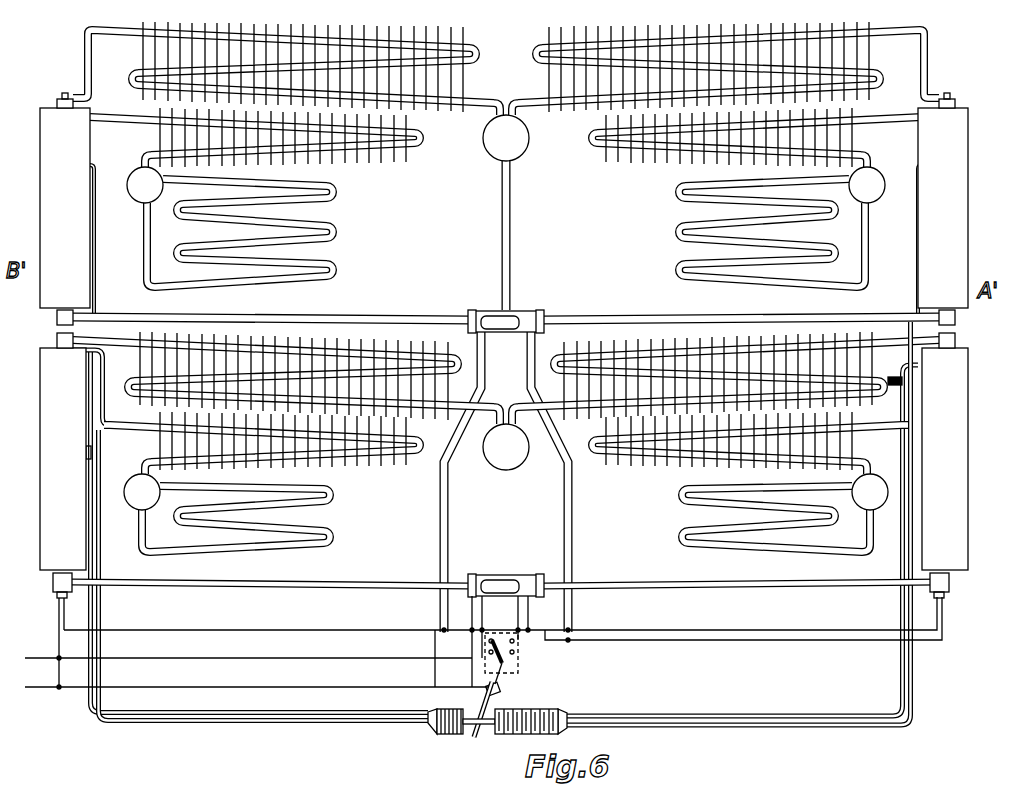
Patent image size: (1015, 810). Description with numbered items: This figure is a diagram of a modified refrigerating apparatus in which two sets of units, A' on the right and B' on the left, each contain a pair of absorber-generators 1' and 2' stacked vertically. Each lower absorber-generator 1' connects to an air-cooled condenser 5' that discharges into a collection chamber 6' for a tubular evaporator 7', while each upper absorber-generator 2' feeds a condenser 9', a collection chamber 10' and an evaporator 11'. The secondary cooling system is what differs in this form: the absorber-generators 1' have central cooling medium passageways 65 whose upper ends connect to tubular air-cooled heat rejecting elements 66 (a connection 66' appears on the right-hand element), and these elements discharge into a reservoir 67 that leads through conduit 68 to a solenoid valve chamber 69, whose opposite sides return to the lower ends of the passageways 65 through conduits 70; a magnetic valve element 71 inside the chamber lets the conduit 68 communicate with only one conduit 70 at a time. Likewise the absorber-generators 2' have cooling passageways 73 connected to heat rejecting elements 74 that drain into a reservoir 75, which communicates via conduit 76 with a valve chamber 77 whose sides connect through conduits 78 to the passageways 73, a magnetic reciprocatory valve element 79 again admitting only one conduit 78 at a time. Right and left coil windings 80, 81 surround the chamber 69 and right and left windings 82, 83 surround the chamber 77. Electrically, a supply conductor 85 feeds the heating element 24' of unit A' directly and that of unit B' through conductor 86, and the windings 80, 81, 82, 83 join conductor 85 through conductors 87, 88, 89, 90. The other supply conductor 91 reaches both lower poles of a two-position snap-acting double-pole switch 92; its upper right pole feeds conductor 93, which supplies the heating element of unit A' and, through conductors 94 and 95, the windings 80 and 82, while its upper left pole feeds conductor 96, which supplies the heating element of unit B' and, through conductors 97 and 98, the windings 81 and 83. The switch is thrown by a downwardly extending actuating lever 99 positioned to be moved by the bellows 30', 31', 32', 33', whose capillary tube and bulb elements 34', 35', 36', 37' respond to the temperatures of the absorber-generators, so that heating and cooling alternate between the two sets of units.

The tubular air cooled heat rejecting element 74 is at (108, 48).
The reservoir 75 is at (506, 138).
The conduit 76 is at (512, 236).
The valve chamber 77 is at (510, 310).
The magnetic reciprocatory valve element 79 is at (497, 316).
The right hand coil winding 82 is at (544, 314).
The left hand coil winding 83 is at (469, 314).
The conduit 78 is at (340, 315).
The cooling medium passageway 73 is at (56, 318).
The cooling medium passageway 65 is at (56, 341).
The tubular air cooled heat rejecting element 66 is at (506, 378).
The valve connection 66' is at (742, 537).
The reservoir 67 is at (506, 447).
The conduit 68 is at (560, 528).
The conductor 98 is at (452, 522).
The conductor 95 is at (563, 535).
The magnetic valve element 71 is at (494, 575).
The right hand coil winding 80 is at (522, 575).
The left hand coil winding 81 is at (470, 578).
The solenoid valve chamber 69 is at (543, 577).
The conduit 70 is at (360, 582).
The conductor 90 is at (438, 611).
The conductor 88 is at (470, 621).
The conductor 97 is at (483, 611).
The conductor 87 is at (530, 619).
The conductor 89 is at (570, 613).
The conductor 96 is at (318, 631).
The conductor 93 is at (686, 633).
The supply conductor 91 is at (155, 656).
The electrical supply conductor 85 is at (275, 687).
The conductor 86 is at (58, 641).
The two position snap acting double pole switch 92 is at (486, 650).
The conductor 94 is at (514, 633).
The actuating lever 99 is at (485, 691).
The bellows 30' is at (452, 731).
The bellows 31' is at (471, 720).
The bellows 32' is at (531, 710).
The bellows 33' is at (562, 710).
The heating element 24' is at (505, 594).
The capillary tube and bulb element 34' is at (242, 536).
The capillary tube and bulb element 35' is at (112, 230).
The capillary tube and bulb element 36' is at (763, 523).
The capillary tube and bulb element 37' is at (904, 232).
The absorber-generator 2' is at (504, 200).
The absorber-generator 1' is at (504, 459).
The tubular air-cooled condenser 9' is at (506, 150).
The tubular air cooled condenser 5' is at (490, 422).
The collection chamber 10' is at (506, 185).
The collection chamber 6' is at (506, 492).
The tubular evaporator 11' is at (506, 233).
The tubular evaporator 7' is at (506, 519).